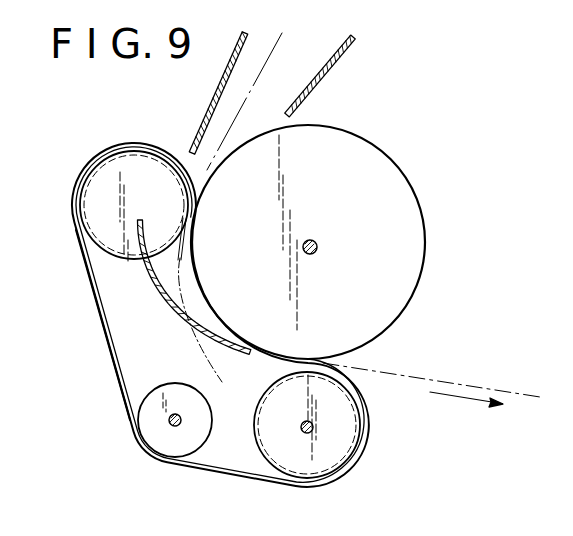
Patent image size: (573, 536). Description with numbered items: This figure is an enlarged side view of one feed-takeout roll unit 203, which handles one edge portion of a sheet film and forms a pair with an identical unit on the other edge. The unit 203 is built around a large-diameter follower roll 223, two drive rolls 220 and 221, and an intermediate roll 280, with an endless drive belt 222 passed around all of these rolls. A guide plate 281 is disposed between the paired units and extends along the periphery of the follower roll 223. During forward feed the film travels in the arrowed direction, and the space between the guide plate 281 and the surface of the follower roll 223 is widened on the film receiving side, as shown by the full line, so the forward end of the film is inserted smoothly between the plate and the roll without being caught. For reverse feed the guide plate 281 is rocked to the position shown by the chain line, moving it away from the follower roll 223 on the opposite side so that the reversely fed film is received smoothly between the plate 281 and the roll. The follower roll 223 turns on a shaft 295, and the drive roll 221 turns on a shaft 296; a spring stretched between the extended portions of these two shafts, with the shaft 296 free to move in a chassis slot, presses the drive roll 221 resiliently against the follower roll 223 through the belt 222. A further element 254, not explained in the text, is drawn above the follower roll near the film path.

The feed-takeout roll unit 203 is at (92, 315).
The drive roll 220 is at (150, 163).
The drive roll 221 is at (348, 437).
The endless drive belt 222 is at (124, 376).
The large-diameter follower roll 223 is at (390, 170).
The sheet guide 254 is at (335, 67).
The intermediate roll 280 is at (172, 438).
The guide plate 281 is at (160, 280).
The shaft 295 is at (316, 252).
The shaft 296 is at (307, 433).